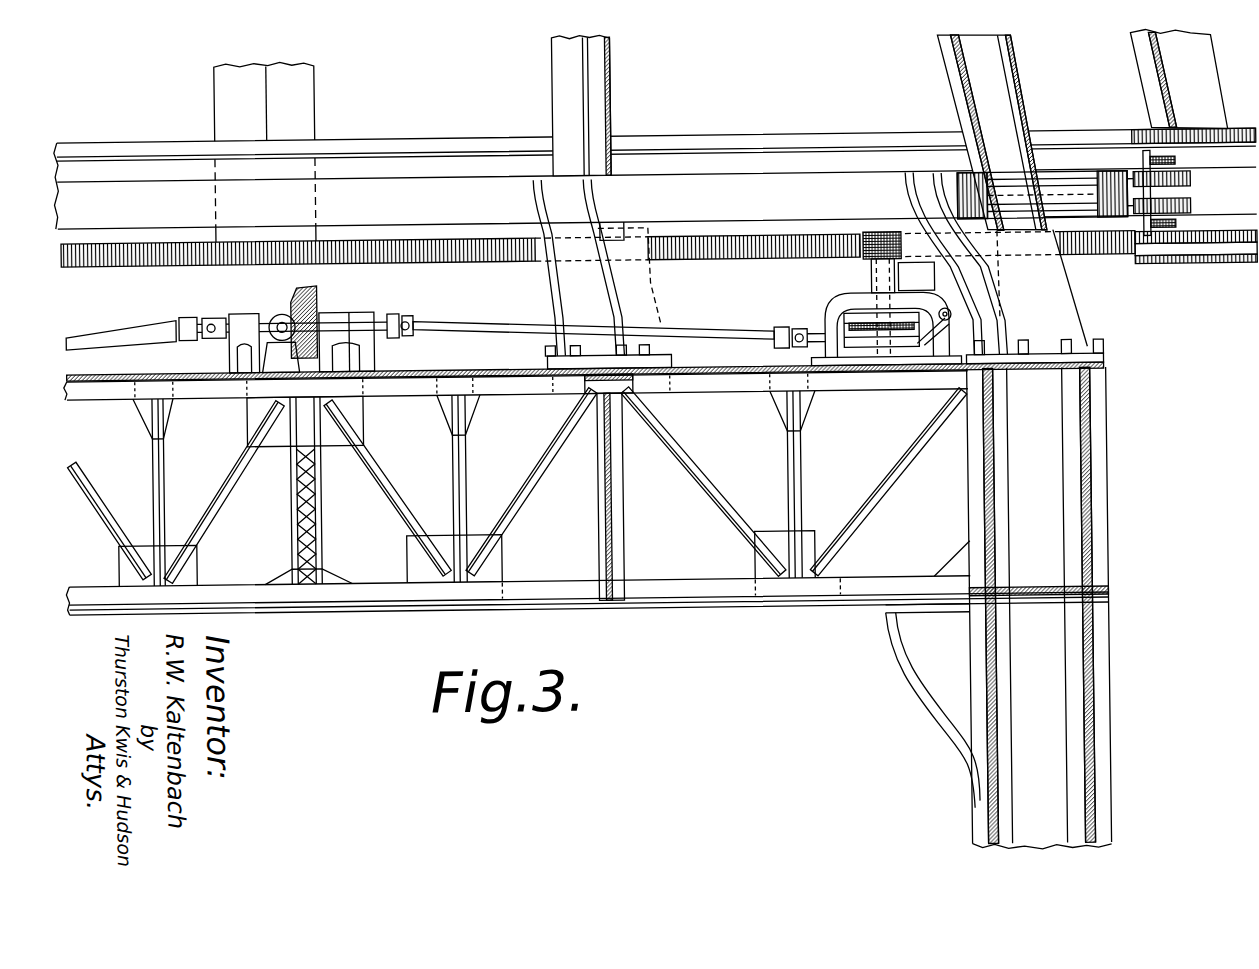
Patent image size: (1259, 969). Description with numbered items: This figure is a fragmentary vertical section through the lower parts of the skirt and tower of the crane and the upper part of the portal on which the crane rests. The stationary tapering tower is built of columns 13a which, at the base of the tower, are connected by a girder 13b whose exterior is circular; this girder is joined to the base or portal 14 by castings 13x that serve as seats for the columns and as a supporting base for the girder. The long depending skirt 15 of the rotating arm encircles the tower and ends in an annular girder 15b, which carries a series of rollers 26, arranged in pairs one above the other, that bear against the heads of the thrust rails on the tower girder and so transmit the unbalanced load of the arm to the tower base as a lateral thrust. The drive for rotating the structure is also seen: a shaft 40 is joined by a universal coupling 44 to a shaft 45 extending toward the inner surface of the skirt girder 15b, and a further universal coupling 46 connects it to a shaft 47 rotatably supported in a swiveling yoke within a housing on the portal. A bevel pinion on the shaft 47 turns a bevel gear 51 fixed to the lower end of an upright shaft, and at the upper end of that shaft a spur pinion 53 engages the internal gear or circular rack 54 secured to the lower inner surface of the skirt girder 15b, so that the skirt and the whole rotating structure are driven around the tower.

The columns 13a is at (564, 100).
The girder 13b is at (1083, 179).
The castings 13x is at (1069, 314).
The base or portal 14 is at (1096, 491).
The skirt 15 is at (1214, 92).
The annular girder 15b is at (1237, 268).
The rollers 26 is at (1187, 197).
The shafts 40 is at (346, 313).
The universal couplings 44 is at (401, 312).
The shafts 45 is at (728, 330).
The universal couplings 46 is at (797, 330).
The shafts 47 is at (867, 370).
The bevel gears 51 is at (897, 370).
The spur pinions 53 is at (864, 262).
The internal gear or circular rack 54 is at (710, 252).